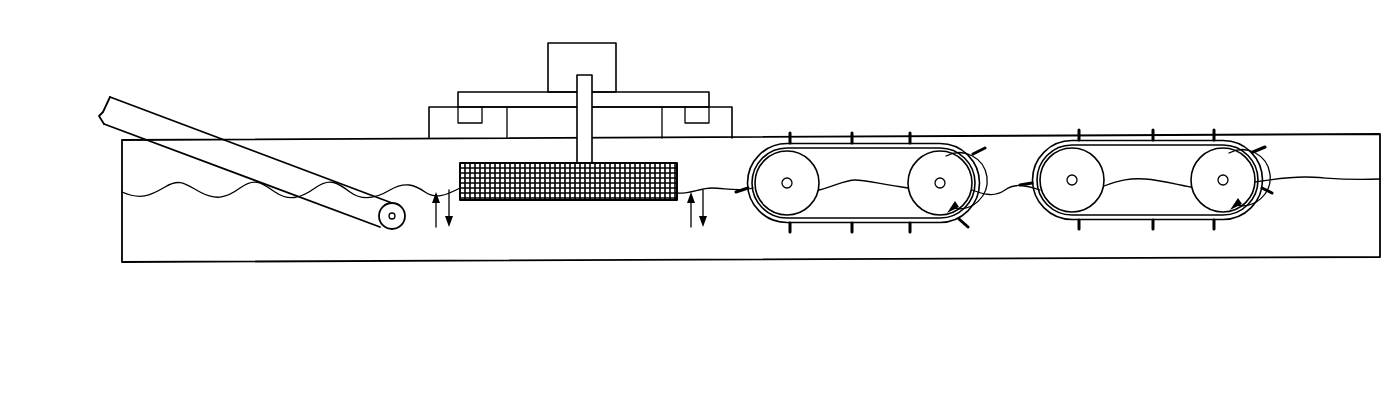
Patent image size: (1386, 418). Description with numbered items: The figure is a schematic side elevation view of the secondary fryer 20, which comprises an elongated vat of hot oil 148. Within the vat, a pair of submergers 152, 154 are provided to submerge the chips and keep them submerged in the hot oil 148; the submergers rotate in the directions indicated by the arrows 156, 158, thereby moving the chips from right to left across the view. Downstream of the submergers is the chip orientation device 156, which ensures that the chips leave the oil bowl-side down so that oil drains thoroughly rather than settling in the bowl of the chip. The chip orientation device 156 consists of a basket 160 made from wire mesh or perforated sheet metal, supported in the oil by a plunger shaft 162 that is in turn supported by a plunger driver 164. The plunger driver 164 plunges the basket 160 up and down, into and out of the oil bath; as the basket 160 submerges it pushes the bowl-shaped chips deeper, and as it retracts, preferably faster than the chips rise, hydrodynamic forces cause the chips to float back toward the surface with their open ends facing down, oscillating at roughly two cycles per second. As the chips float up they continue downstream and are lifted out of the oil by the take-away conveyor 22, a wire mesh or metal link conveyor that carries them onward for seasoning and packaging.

The secondary fryer 20 is at (943, 277).
The take-away conveyor 22 is at (183, 88).
The hot oil 148 is at (1342, 217).
The submerger 152 is at (1127, 164).
The submerger 154 is at (884, 127).
The chip orientation device 156 is at (654, 69).
The arrow 158 is at (968, 207).
The basket 160 is at (512, 201).
The plunger shaft 162 is at (586, 123).
The plunger driver 164 is at (548, 68).